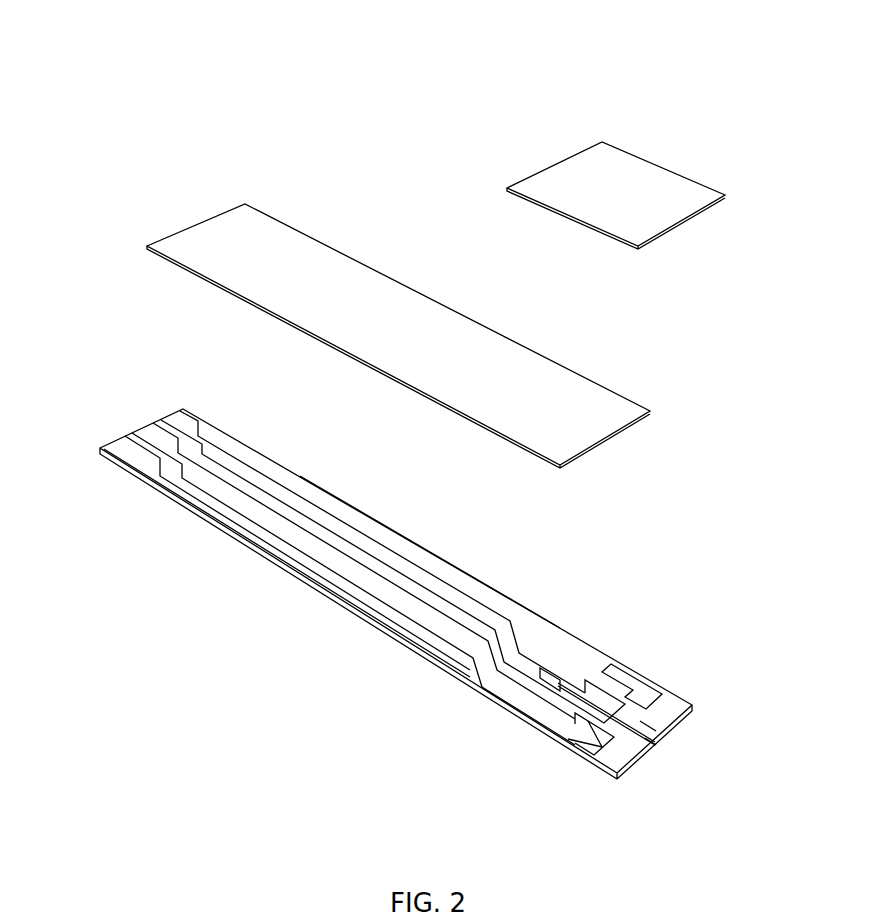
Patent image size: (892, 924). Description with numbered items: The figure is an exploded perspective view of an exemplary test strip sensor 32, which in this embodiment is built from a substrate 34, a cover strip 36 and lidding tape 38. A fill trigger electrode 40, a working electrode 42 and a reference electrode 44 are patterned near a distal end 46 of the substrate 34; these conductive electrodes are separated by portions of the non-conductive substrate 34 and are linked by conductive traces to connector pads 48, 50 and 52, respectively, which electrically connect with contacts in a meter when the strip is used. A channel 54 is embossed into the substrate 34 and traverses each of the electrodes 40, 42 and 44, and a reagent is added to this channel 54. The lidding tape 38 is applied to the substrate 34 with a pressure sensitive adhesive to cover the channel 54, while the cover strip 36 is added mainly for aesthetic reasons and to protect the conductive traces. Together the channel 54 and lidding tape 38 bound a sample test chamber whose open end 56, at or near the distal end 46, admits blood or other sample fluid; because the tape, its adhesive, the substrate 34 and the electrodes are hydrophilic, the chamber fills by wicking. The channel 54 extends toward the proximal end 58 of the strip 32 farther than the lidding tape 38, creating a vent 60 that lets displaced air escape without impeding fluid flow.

The test strip sensor 32 is at (337, 85).
The substrate 34 is at (538, 630).
The cover strip 36 is at (585, 385).
The lidding tape 38 is at (640, 172).
The fill trigger electrode 40 is at (530, 662).
The working electrode 42 is at (607, 672).
The reference electrode 44 is at (582, 727).
The distal end 46 is at (700, 690).
The connector pad 48 is at (190, 420).
The connector pad 50 is at (160, 440).
The connector pad 52 is at (123, 450).
The channel 54 is at (648, 722).
The open end 56 is at (655, 745).
The proximal end 58 is at (150, 542).
The vent 60 is at (545, 677).